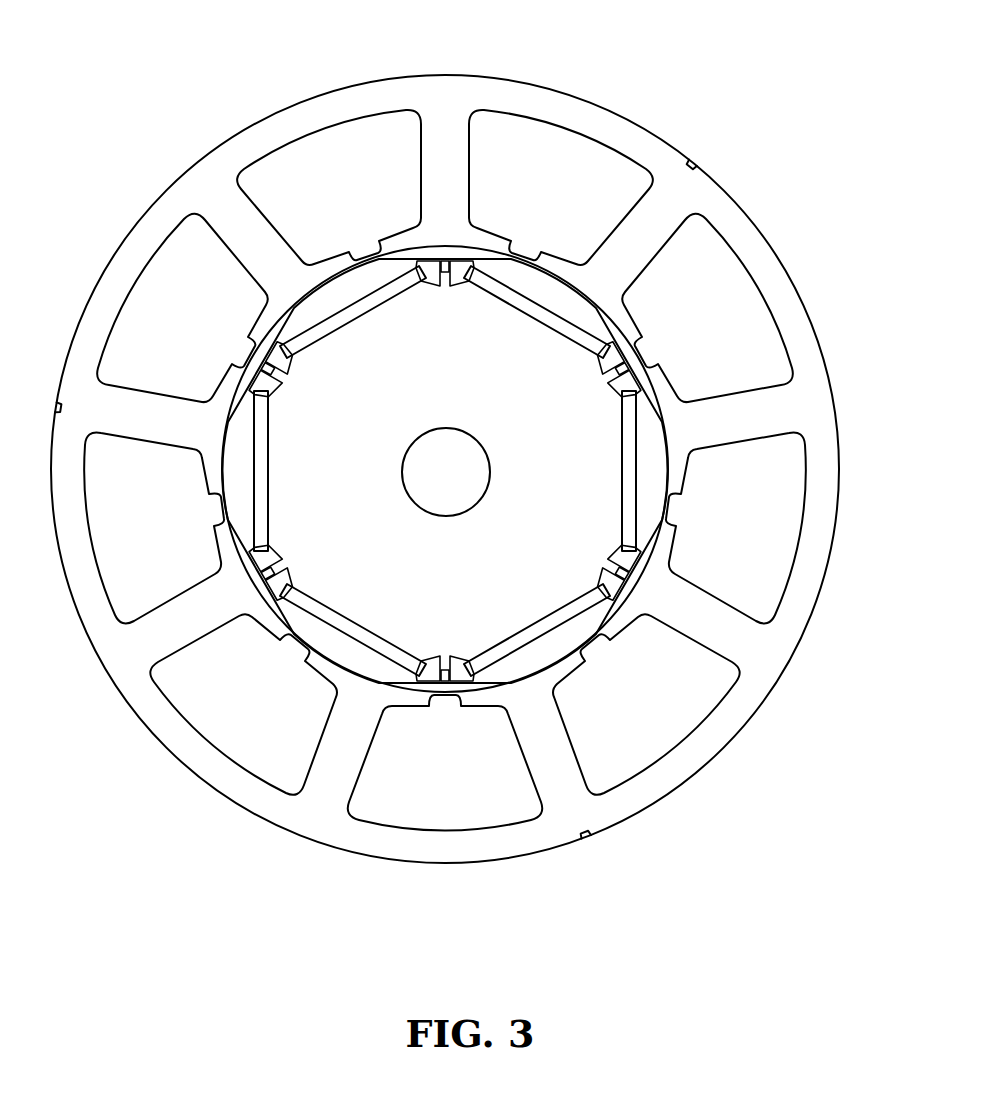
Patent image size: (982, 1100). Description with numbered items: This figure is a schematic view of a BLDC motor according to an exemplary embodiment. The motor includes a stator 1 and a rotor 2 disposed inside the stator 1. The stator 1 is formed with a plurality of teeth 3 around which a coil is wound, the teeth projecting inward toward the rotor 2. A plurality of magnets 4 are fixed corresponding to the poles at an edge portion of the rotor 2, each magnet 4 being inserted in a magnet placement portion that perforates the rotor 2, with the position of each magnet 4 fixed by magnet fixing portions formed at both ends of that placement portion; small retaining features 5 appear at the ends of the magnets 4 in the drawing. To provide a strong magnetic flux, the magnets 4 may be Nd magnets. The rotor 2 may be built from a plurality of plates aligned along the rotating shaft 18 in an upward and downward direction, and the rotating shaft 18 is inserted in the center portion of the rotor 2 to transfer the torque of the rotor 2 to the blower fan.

The stator 1 is at (795, 305).
The rotor 2 is at (510, 573).
The teeth 3 is at (680, 468).
The magnets 4 is at (632, 505).
The magnet retaining projection 5 is at (462, 262).
The rotating shaft 18 is at (455, 452).